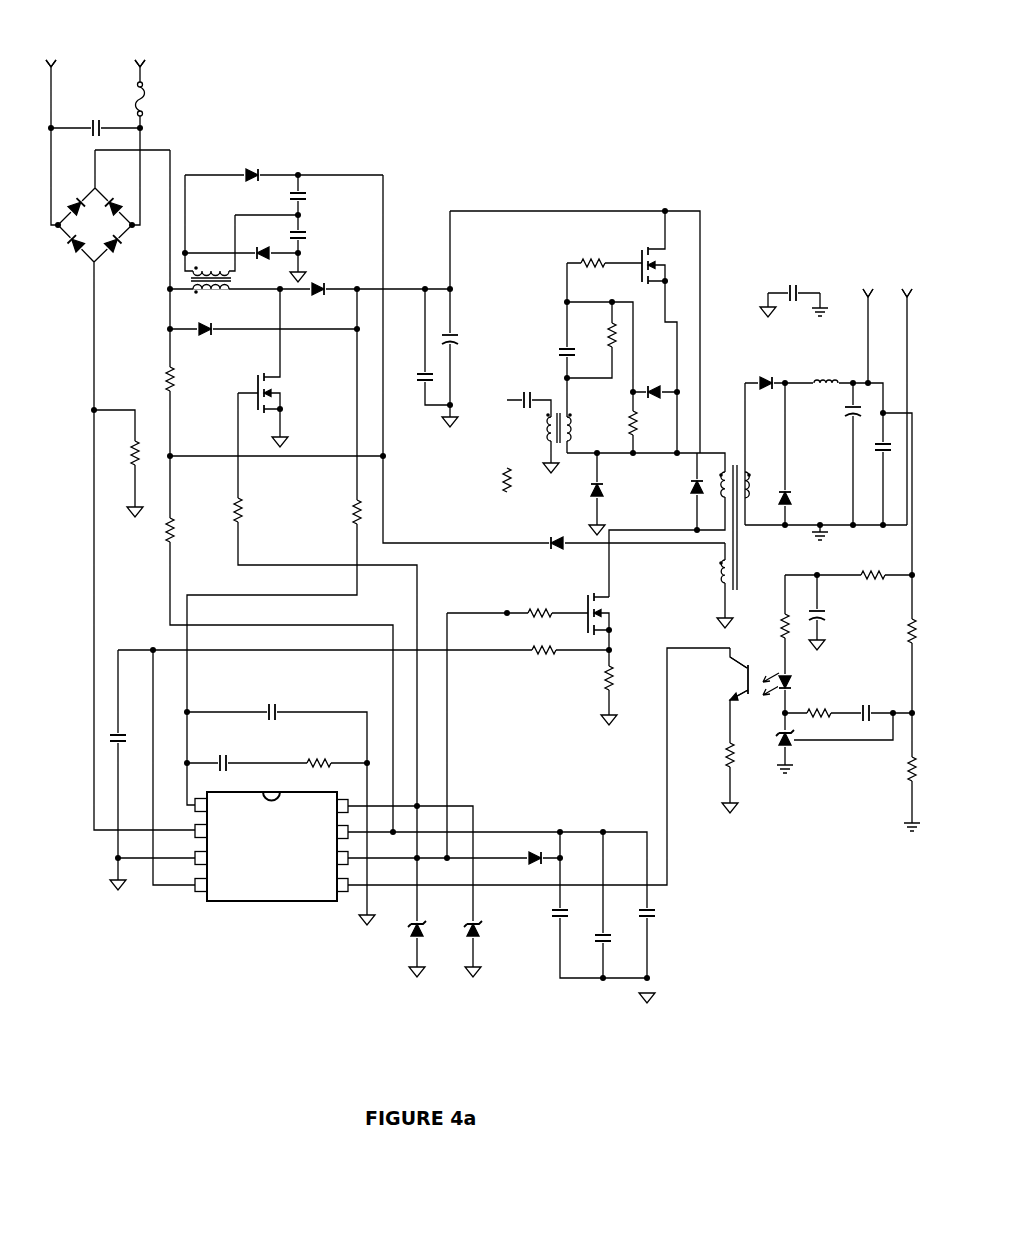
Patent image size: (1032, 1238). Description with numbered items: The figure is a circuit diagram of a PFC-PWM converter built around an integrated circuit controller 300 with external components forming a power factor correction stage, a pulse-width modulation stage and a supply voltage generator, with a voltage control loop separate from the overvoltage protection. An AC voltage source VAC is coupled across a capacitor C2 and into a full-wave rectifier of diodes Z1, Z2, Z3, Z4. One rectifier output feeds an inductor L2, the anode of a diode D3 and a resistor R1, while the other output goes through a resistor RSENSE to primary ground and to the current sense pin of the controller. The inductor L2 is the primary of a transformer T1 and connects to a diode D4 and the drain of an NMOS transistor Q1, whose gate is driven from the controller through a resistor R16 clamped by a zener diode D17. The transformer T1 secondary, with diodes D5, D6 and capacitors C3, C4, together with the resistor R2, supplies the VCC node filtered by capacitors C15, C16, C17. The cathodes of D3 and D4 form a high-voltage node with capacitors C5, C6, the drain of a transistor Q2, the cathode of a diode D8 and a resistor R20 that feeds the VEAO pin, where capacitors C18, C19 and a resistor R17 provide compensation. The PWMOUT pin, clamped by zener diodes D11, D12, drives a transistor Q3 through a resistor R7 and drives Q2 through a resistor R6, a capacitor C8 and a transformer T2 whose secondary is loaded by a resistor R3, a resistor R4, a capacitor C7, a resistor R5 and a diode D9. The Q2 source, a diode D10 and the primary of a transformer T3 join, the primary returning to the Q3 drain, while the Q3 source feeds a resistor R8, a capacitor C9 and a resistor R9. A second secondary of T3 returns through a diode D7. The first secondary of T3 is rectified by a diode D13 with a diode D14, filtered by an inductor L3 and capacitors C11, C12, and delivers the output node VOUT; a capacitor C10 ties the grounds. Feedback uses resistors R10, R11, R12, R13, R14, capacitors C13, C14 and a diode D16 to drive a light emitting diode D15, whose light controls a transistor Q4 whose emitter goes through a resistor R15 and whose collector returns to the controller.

The AC voltage source VAC is at (95, 58).
The capacitor C2 is at (96, 118).
The diode Z1 is at (117, 189).
The diode Z2 is at (122, 255).
The diode Z3 is at (71, 258).
The diode Z4 is at (72, 189).
The resistor RSENSE is at (123, 455).
The diode D6 is at (247, 188).
The diode D5 is at (259, 244).
The capacitor C3 is at (319, 198).
The capacitor C4 is at (319, 238).
The transformer T1 is at (228, 280).
The inductor L2 is at (219, 306).
The diode D4 is at (314, 301).
The diode D3 is at (201, 342).
The resistor R1 is at (185, 379).
The NMOS transistor Q1 is at (245, 384).
The resistor R16 is at (217, 510).
The resistor R2 is at (185, 531).
The resistor R20 is at (334, 512).
The capacitor C5 is at (462, 324).
The capacitor C6 is at (413, 388).
The resistor R3 is at (595, 252).
The NMOS transistor Q2 is at (639, 252).
The resistor R4 is at (599, 333).
The capacitor C7 is at (550, 343).
The capacitor C8 is at (526, 389).
The diode D9 is at (657, 381).
The resistor R5 is at (647, 421).
The transformer T2 is at (572, 427).
The resistor R6 is at (523, 480).
The diode D10 is at (618, 493).
The diode D8 is at (685, 500).
The diode D7 is at (554, 532).
The transformer T3 is at (734, 502).
The NMOS transistor Q3 is at (586, 600).
The resistor R7 is at (544, 599).
The resistor R8 is at (544, 667).
The resistor R9 is at (626, 678).
The capacitor C10 is at (797, 281).
The output node VOUT is at (886, 280).
The diode D13 is at (761, 366).
The inductor L3 is at (827, 369).
The capacitor C11 is at (838, 424).
The capacitor C12 is at (876, 469).
The diode D14 is at (806, 487).
The resistor R10 is at (875, 564).
The capacitor C13 is at (828, 612).
The resistor R11 is at (891, 634).
The resistor R12 is at (766, 627).
The light emitting diode D15 is at (808, 677).
The resistor R13 is at (827, 702).
The capacitor C14 is at (870, 703).
The diode D16 is at (805, 748).
The resistor R14 is at (890, 770).
The transistor Q4 is at (723, 678).
The resistor R15 is at (709, 756).
The capacitor C9 is at (131, 752).
The capacitor C18 is at (275, 699).
The capacitor C19 is at (227, 750).
The resistor R17 is at (322, 754).
The integrated circuit controller 300 is at (272, 903).
The Zener diode D11 is at (397, 942).
The zener diode D17 is at (494, 941).
The Zener diode D12 is at (513, 870).
The capacitor C15 is at (539, 913).
The capacitor C16 is at (588, 952).
The capacitor C17 is at (669, 915).